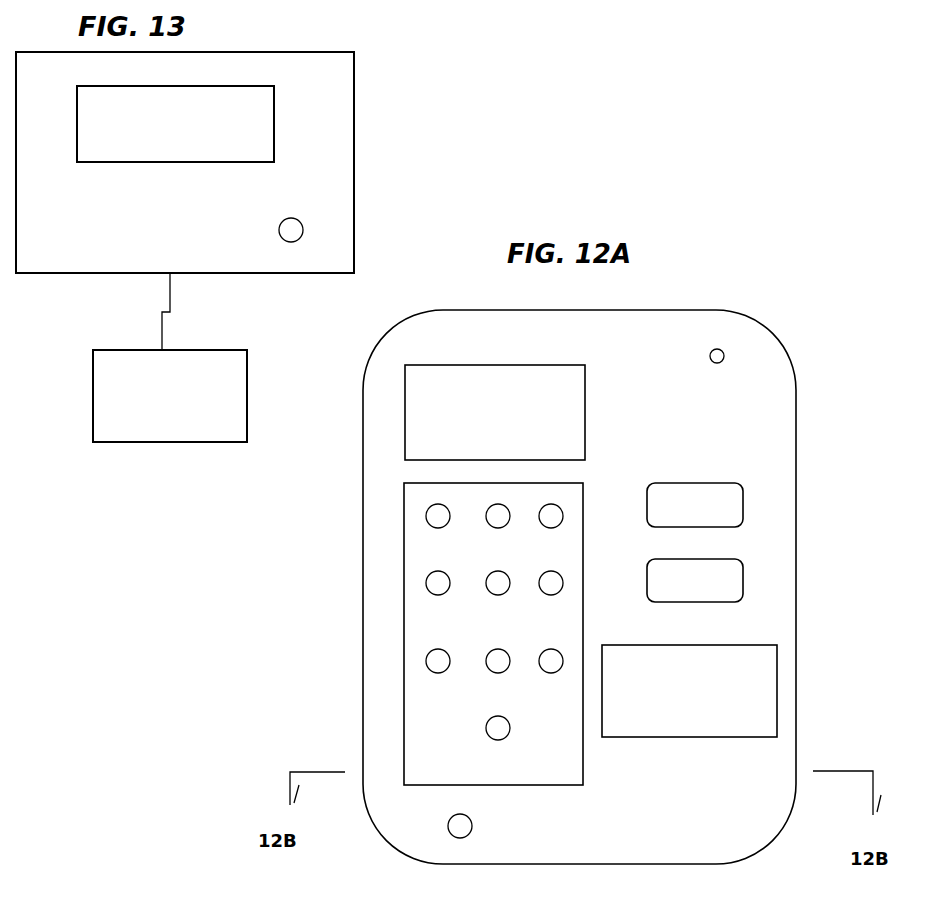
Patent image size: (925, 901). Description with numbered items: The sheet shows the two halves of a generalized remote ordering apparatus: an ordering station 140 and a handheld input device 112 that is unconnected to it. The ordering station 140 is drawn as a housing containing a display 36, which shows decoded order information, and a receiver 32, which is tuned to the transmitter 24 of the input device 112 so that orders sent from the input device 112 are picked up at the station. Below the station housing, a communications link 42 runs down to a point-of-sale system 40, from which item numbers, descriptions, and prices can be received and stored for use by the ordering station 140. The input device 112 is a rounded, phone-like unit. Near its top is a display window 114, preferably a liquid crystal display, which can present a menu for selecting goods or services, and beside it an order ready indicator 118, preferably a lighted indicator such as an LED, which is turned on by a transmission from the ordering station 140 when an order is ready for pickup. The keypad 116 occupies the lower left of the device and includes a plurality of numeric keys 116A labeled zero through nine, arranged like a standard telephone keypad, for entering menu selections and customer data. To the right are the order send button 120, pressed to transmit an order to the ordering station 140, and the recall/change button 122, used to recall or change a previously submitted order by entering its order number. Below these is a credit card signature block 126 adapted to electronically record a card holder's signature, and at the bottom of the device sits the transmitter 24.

In FIG. 13, the ordering station 140 is at (345, 51).
In FIG. 13, the display 36 is at (249, 118).
In FIG. 13, the receiver 32 is at (302, 227).
In FIG. 13, the communications link 42 is at (178, 308).
In FIG. 13, the point-of-sale system 40 is at (92, 407).
In FIG. 12A, the input device 112 is at (797, 389).
In FIG. 12A, the display window 114 is at (560, 365).
In FIG. 12A, the order ready indicator 118 is at (713, 349).
In FIG. 12A, the order send button 120 is at (725, 493).
In FIG. 12A, the recall/change button 122 is at (735, 556).
In FIG. 12A, the credit card signature block 126 is at (733, 670).
In FIG. 12A, the keypad 116 is at (403, 533).
In FIG. 12A, the numeric keys 116A is at (440, 587).
In FIG. 12A, the transmitter 24 is at (448, 823).